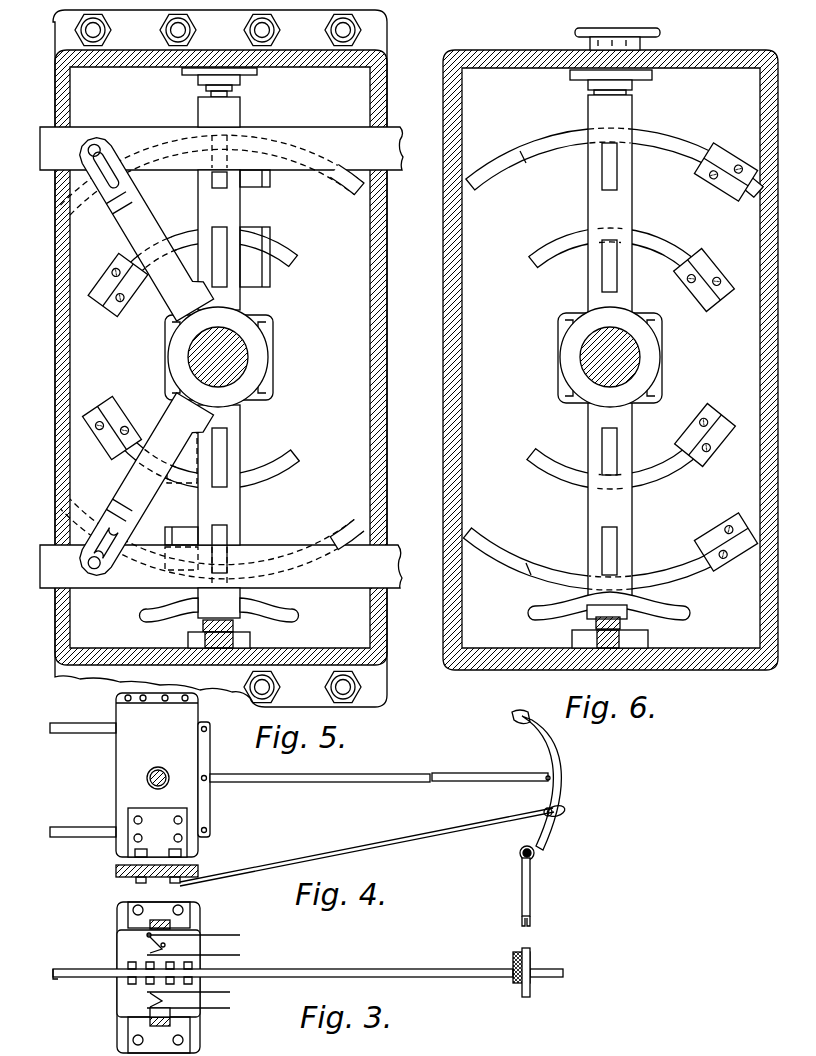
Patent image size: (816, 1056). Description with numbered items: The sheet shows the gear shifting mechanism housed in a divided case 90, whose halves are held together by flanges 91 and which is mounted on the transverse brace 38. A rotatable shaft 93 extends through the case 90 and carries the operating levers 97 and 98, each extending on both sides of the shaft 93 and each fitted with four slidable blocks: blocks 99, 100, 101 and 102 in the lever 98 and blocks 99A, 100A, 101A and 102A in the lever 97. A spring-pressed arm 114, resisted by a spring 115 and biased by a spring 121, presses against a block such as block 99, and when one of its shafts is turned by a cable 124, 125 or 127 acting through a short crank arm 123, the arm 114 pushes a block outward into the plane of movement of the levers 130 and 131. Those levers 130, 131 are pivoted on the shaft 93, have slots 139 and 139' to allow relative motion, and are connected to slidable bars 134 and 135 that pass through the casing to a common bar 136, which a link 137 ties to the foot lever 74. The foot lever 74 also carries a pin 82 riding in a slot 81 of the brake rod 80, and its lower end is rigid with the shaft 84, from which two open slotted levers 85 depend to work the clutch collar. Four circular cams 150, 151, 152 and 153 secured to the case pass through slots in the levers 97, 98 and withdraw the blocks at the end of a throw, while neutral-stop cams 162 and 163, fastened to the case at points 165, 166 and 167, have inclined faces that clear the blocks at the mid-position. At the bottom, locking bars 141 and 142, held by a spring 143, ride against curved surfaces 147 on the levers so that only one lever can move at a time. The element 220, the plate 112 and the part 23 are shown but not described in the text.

In FIG. 5, the flanges 91 is at (375, 32).
In FIG. 5, the divided case 90 is at (388, 246).
In FIG. 6, the divided case 90 is at (610, 360).
In FIG. 4, the divided case 90 is at (126, 775).
In FIG. 3, the divided case 90 is at (120, 1003).
In FIG. 5, the spring 115 is at (207, 90).
In FIG. 5, the slidable bar 135 is at (326, 143).
In FIG. 3, the slidable bar 135 is at (83, 977).
In FIG. 5, the slidable bar 134 is at (262, 555).
In FIG. 5, the circular cam 151 is at (268, 176).
In FIG. 5, the circular cam 152 is at (336, 535).
In FIG. 5, the circular cam 162 is at (284, 250).
In FIG. 6, the circular cam 162 is at (548, 252).
In FIG. 5, the circular cam 163 is at (264, 464).
In FIG. 6, the circular cam 163 is at (544, 463).
In FIG. 5, the operating lever 98 is at (233, 296).
In FIG. 5, the block 99 is at (222, 194).
In FIG. 5, the block 100 is at (216, 265).
In FIG. 5, the block 101 is at (219, 432).
In FIG. 5, the block 102 is at (220, 527).
In FIG. 5, the arm 114 is at (268, 189).
In FIG. 5, the guide block 220 is at (268, 276).
In FIG. 5, the hub mounting plate 112 is at (274, 335).
In FIG. 5, the shaft 93 is at (252, 356).
In FIG. 6, the shaft 93 is at (610, 357).
In FIG. 4, the shaft 93 is at (165, 760).
In FIG. 5, the lever 131 is at (138, 228).
In FIG. 5, the lever 130 is at (116, 492).
In FIG. 5, the slot 139 is at (105, 138).
In FIG. 5, the slot 139' is at (97, 577).
In FIG. 5, the cam securing point 165 is at (122, 306).
In FIG. 5, the cam securing point 166 is at (94, 422).
In FIG. 6, the cam securing point 166 is at (711, 264).
In FIG. 6, the cam securing point 167 is at (695, 425).
In FIG. 5, the spring 143 is at (246, 630).
In FIG. 6, the spring 143 is at (642, 641).
In FIG. 6, the knob 23 is at (645, 45).
In FIG. 6, the spring 121 is at (594, 92).
In FIG. 6, the operating lever 97 is at (620, 116).
In FIG. 6, the circular cam 150 is at (503, 160).
In FIG. 6, the circular cam 153 is at (515, 545).
In FIG. 6, the block 99A is at (611, 178).
In FIG. 6, the block 100A is at (610, 288).
In FIG. 6, the block 101A is at (612, 462).
In FIG. 6, the block 102A is at (612, 558).
In FIG. 6, the curved surface 147 is at (668, 620).
In FIG. 6, the locking bar 142 is at (586, 636).
In FIG. 6, the locking bar 141 is at (619, 638).
In FIG. 4, the bar 136 is at (210, 744).
In FIG. 4, the link 137 is at (295, 785).
In FIG. 3, the link 137 is at (375, 969).
In FIG. 4, the rod 80 is at (396, 842).
In FIG. 4, the foot lever 74 is at (521, 712).
In FIG. 3, the foot lever 74 is at (530, 958).
In FIG. 4, the slot 81 is at (556, 809).
In FIG. 4, the pin 82 is at (548, 818).
In FIG. 4, the shaft 84 is at (535, 863).
In FIG. 4, the open slotted levers 85 is at (531, 920).
In FIG. 3, the cable 127 is at (246, 928).
In FIG. 3, the short crank arm 123 is at (145, 946).
In FIG. 3, the cable 125 is at (222, 992).
In FIG. 3, the cable 124 is at (232, 1010).
In FIG. 3, the transverse brace 38 is at (120, 1033).